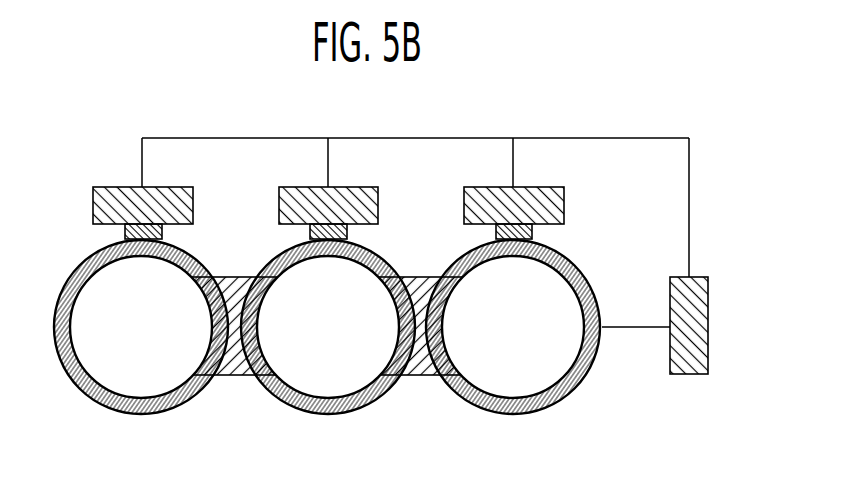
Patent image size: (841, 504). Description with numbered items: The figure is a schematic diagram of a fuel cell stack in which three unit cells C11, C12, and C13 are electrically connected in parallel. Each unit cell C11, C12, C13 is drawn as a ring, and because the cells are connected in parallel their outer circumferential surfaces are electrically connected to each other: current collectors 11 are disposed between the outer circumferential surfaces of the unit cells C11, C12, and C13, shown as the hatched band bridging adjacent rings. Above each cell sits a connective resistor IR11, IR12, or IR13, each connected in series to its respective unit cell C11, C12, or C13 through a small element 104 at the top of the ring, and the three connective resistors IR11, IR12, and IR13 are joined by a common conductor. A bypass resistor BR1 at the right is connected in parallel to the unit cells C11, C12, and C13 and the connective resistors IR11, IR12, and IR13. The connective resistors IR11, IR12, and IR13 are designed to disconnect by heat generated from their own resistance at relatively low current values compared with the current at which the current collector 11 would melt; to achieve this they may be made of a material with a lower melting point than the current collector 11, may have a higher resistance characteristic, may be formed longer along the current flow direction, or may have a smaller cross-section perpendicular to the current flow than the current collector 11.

The current collector 11 is at (237, 375).
The coupling connector 104 is at (125, 229).
The unit cell C11 is at (178, 257).
The unit cell C12 is at (365, 257).
The unit cell C13 is at (551, 255).
The connective resistor IR11 is at (164, 205).
The connective resistor IR12 is at (349, 205).
The connective resistor IR13 is at (535, 205).
The bypass resistor BR1 is at (690, 342).